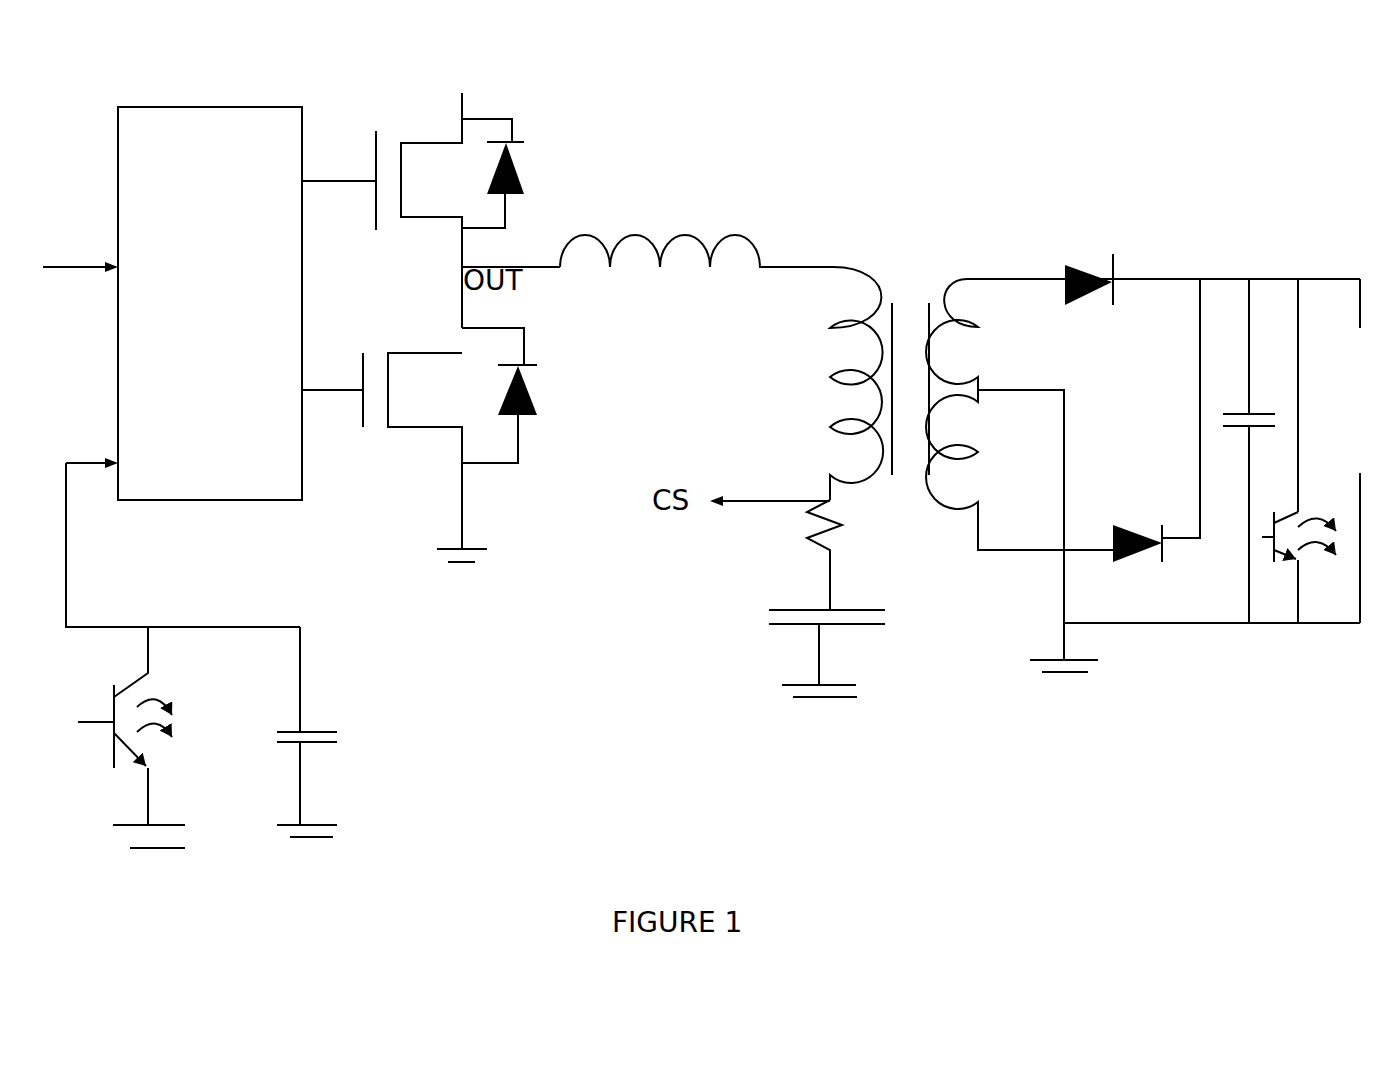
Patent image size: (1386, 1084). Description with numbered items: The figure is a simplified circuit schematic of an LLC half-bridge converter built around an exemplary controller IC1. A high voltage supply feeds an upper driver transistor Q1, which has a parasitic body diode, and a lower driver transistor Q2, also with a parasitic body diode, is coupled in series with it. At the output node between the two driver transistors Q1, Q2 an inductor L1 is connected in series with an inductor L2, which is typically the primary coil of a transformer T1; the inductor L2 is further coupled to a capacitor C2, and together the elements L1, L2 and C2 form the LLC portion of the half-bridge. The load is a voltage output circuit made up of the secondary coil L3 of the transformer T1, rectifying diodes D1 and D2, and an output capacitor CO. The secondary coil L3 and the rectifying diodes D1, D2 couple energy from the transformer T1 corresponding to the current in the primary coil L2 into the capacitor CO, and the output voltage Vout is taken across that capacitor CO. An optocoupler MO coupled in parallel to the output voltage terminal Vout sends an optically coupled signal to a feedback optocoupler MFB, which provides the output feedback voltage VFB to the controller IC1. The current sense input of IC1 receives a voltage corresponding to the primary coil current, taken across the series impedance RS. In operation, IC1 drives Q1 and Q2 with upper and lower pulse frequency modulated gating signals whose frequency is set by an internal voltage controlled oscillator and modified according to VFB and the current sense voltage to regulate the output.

The controller IC IC1 is at (285, 493).
The upper driver transistor Q1 is at (450, 187).
The lower driver transistor Q2 is at (450, 445).
The inductor L1 is at (696, 230).
The transformer T1 is at (947, 412).
The inductor (primary coil) L2 is at (832, 383).
The secondary coil L3 is at (1019, 451).
The series impedance RS is at (840, 555).
The capacitor C2 is at (821, 634).
The rectifying diode D1 is at (1163, 255).
The rectifying diode D2 is at (1156, 420).
The output capacitor CO is at (1244, 451).
The optocoupler MO is at (1307, 451).
The output voltage Vout is at (1346, 451).
The feedback optocoupler MFB is at (155, 737).
The output feedback voltage VFB is at (334, 732).